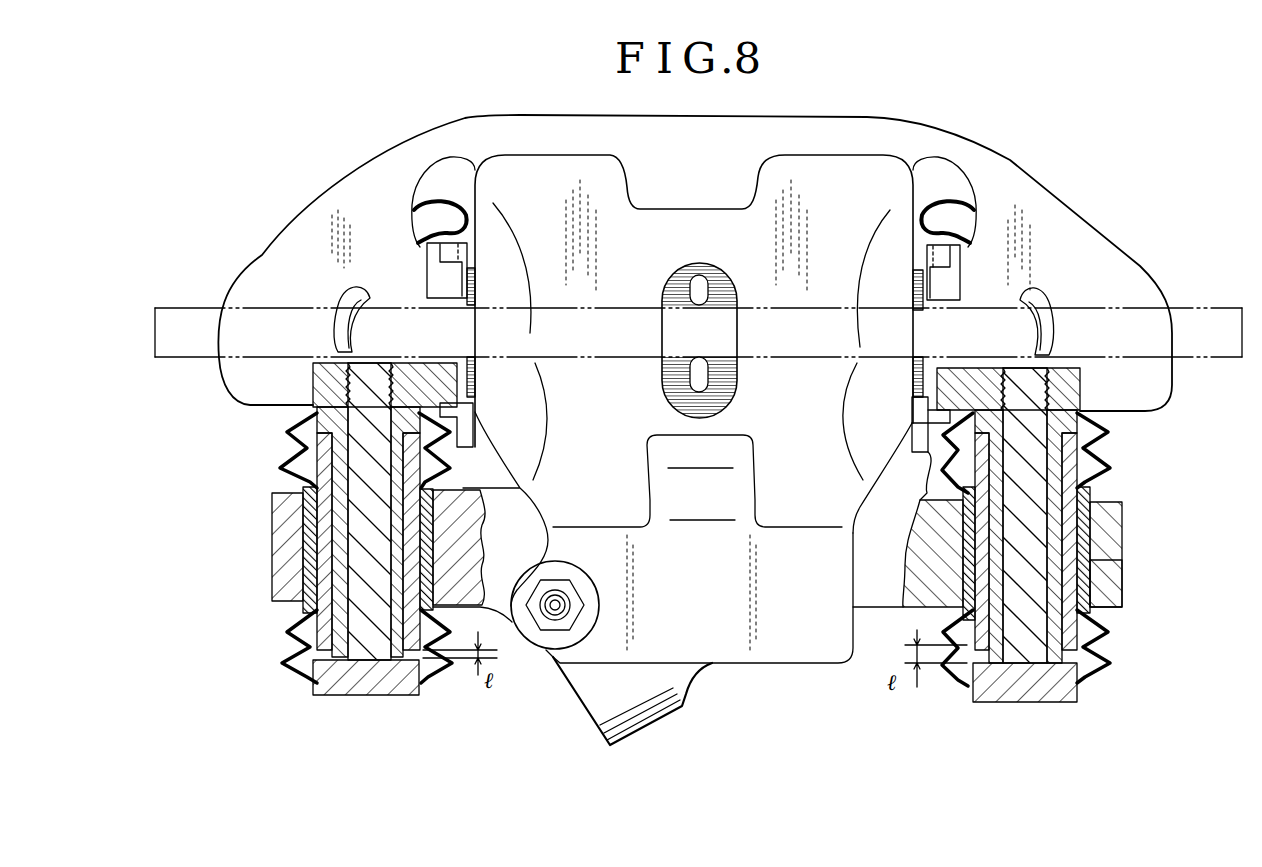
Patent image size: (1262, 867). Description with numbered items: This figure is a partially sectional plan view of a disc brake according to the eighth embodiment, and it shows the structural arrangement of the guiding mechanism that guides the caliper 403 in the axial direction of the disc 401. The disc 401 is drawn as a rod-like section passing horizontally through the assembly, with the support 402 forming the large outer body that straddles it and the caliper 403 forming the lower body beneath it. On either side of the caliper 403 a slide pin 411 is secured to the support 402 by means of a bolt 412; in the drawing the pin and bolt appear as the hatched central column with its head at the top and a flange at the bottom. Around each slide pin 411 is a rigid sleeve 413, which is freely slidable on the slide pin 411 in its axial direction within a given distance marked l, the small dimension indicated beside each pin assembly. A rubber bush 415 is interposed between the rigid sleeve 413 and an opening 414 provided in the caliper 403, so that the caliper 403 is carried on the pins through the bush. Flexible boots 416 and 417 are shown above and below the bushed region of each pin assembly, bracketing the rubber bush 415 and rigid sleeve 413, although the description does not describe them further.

The disc 401 is at (1200, 322).
The support 402 is at (1060, 223).
The caliper 403 is at (822, 666).
The slide pin 411 is at (338, 655).
The bolt 412 is at (370, 648).
The rigid sleeve 413 is at (323, 503).
The opening 414 is at (1072, 573).
The rubber bush 415 is at (302, 553).
The upper boot 416 is at (288, 461).
The lower boot 417 is at (290, 631).